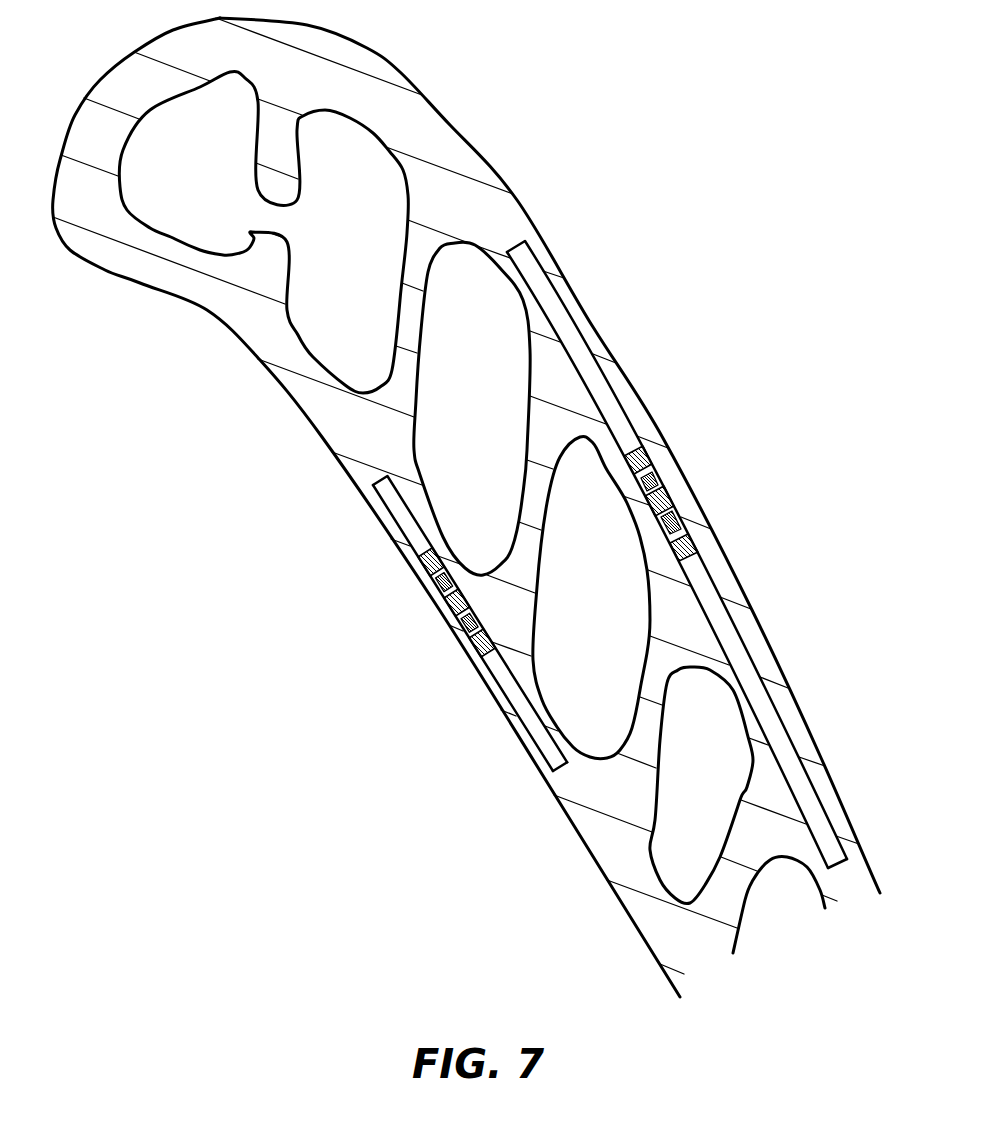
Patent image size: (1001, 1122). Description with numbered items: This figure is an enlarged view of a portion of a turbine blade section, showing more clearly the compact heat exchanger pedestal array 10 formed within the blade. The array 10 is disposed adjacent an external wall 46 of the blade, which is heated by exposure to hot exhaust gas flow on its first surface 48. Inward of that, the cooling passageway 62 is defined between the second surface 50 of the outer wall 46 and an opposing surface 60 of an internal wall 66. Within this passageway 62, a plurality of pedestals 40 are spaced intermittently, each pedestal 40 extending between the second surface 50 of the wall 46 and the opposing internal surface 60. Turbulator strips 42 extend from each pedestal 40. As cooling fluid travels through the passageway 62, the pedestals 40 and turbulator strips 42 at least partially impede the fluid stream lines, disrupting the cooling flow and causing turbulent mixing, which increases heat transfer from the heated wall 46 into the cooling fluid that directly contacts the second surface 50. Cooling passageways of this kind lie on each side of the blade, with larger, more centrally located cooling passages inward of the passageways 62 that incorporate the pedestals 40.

The compact heat exchanger pedestal array 10 is at (438, 617).
The pedestal 40 is at (423, 550).
The turbulator strip 42 is at (432, 593).
The external wall 46 is at (695, 499).
The first surface 48 is at (748, 593).
The second surface 50 is at (505, 686).
The opposing internal surface 60 is at (557, 742).
The cooling passageway 62 is at (385, 489).
The internal wall 66 is at (427, 510).